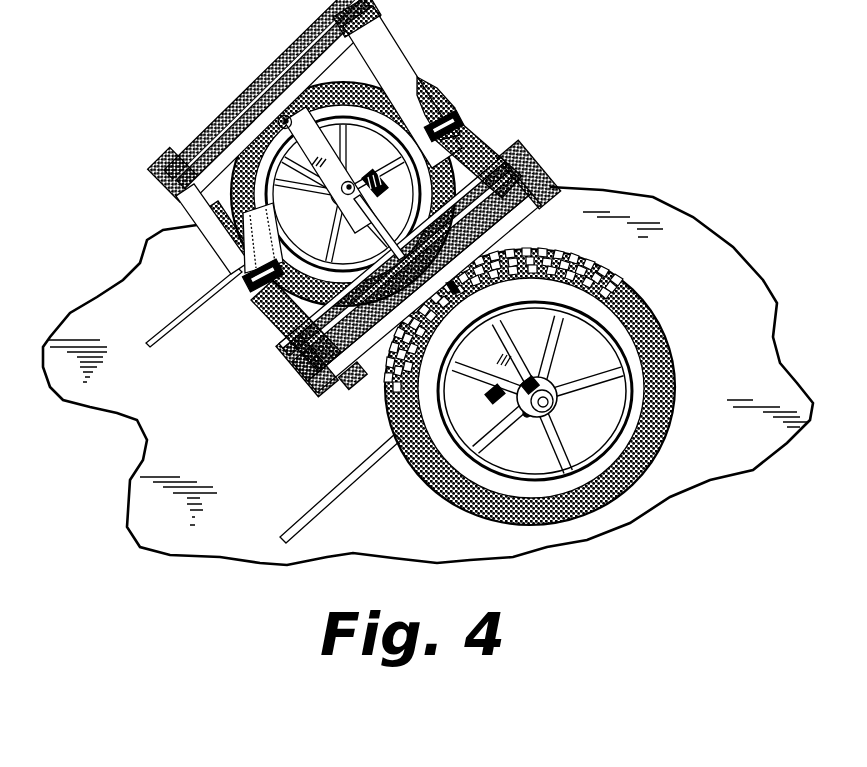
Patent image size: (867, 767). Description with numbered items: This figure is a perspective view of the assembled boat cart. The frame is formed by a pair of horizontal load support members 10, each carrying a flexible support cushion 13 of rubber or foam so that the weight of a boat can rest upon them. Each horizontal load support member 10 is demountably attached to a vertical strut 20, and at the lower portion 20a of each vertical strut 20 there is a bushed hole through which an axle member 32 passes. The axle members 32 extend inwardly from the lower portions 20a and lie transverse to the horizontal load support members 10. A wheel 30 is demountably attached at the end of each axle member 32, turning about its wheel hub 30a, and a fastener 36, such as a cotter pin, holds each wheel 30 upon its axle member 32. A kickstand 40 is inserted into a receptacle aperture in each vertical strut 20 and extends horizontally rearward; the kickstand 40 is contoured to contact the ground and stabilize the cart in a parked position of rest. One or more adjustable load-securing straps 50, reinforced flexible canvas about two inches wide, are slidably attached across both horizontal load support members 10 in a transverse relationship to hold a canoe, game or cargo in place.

The horizontal load support member 10 is at (354, 227).
The support cushion 13 is at (295, 55).
The vertical strut 20 is at (224, 160).
The lower portion of vertical strut 20a is at (335, 165).
The wheel 30 is at (440, 303).
The wheel hub 30a is at (560, 372).
The axle member 32 is at (373, 231).
The fastener 36 is at (524, 423).
The kickstand 40 is at (157, 337).
The load-securing strap 50 is at (205, 207).